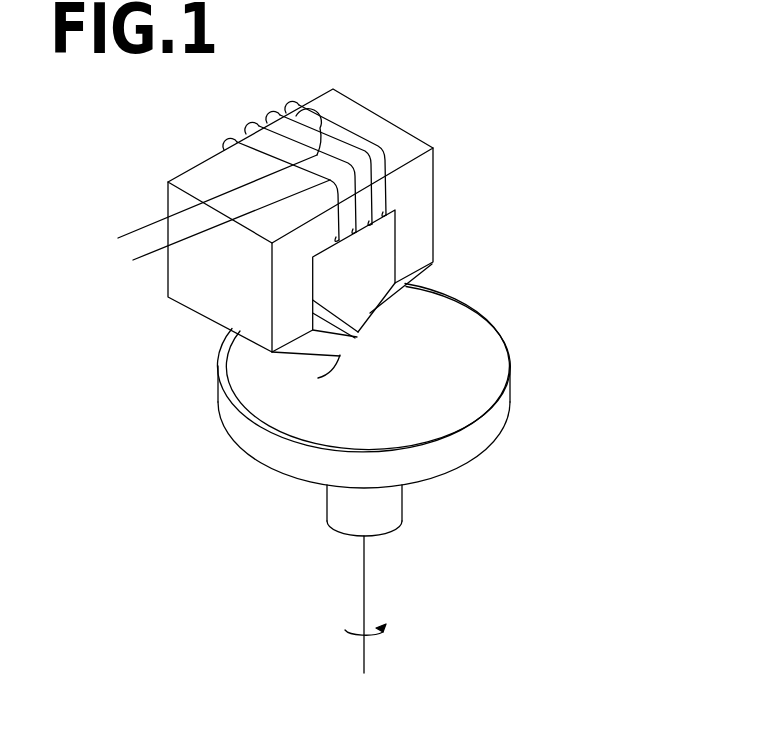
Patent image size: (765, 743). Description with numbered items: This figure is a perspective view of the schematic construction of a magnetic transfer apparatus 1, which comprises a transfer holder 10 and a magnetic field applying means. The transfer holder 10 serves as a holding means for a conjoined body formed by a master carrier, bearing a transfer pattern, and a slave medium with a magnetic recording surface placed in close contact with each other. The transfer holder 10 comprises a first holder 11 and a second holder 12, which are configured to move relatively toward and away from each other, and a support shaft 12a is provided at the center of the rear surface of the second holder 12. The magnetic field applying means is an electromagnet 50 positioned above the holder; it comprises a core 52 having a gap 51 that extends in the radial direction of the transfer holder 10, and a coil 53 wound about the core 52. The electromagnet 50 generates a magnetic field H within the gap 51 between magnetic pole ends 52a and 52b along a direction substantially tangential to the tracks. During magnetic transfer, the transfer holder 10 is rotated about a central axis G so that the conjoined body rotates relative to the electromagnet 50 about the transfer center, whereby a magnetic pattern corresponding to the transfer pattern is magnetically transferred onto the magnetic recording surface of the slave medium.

The magnetic transfer apparatus 1 is at (463, 140).
The transfer holder 10 is at (603, 290).
The first holder 11 is at (488, 358).
The second holder 12 is at (502, 413).
The support shaft 12a is at (385, 512).
The electromagnet 50 is at (372, 98).
The gap 51 is at (320, 333).
The core 52 is at (418, 215).
The magnetic pole end 52a is at (318, 378).
The magnetic pole end 52b is at (452, 291).
The coil 53 is at (152, 218).
The magnetic field H is at (390, 333).
The central axis G is at (365, 623).